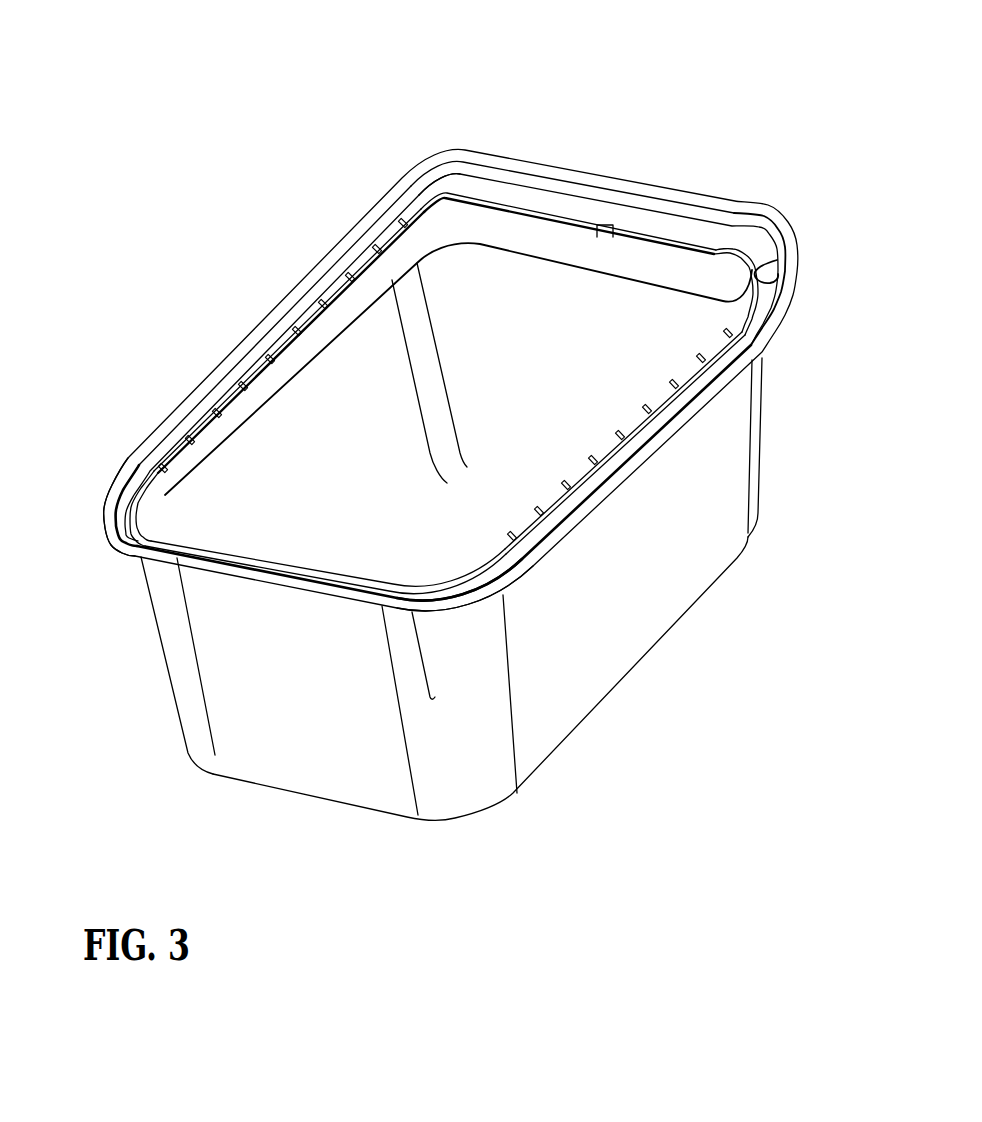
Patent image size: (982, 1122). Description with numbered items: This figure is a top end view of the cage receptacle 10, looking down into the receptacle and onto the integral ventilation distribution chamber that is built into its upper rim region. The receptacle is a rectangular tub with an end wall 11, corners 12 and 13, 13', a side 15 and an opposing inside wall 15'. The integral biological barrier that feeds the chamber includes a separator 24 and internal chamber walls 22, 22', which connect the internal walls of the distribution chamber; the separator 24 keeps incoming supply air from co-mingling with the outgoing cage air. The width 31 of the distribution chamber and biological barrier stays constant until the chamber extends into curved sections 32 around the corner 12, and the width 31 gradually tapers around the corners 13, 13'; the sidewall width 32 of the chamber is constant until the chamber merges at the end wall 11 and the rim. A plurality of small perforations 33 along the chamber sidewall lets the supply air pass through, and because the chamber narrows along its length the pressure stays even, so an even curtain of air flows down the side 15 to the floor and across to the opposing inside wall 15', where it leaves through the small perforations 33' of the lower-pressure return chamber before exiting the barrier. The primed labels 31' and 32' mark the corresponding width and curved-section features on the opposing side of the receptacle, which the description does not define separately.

The cage receptacle 10 is at (573, 677).
The end wall 11 is at (277, 750).
The corner 12 is at (768, 313).
The corner 13 is at (91, 507).
The corner 13' is at (483, 607).
The side 15 is at (671, 575).
The opposing inside wall 15' is at (426, 369).
The internal chamber wall 22 is at (491, 383).
The internal chamber wall 22' is at (568, 176).
The separator 24 is at (613, 222).
The width 31 is at (785, 270).
The rim groove 31' is at (426, 139).
The sidewall width 32 is at (796, 279).
The rib strip 32' is at (277, 353).
The small perforations 33 is at (491, 460).
The small perforations 33' is at (379, 373).